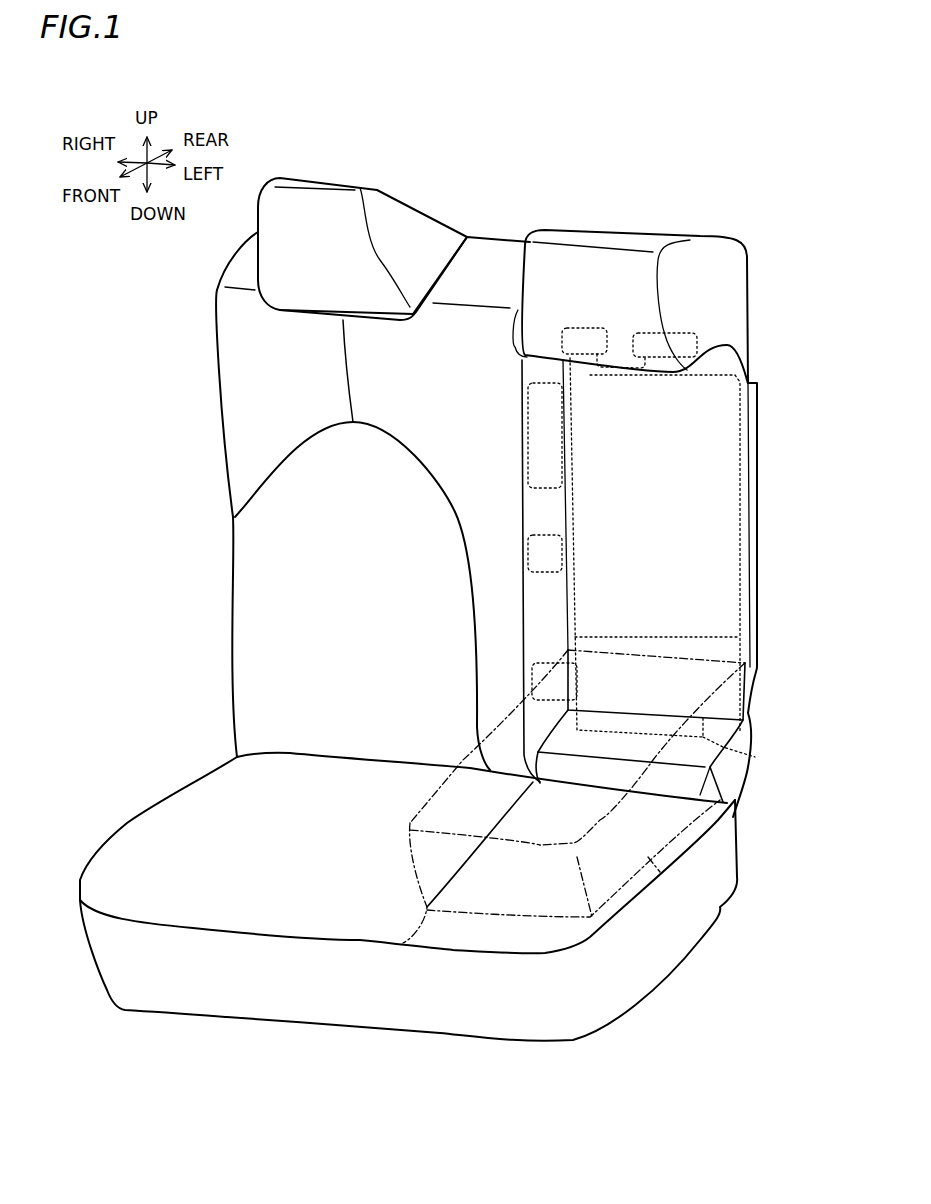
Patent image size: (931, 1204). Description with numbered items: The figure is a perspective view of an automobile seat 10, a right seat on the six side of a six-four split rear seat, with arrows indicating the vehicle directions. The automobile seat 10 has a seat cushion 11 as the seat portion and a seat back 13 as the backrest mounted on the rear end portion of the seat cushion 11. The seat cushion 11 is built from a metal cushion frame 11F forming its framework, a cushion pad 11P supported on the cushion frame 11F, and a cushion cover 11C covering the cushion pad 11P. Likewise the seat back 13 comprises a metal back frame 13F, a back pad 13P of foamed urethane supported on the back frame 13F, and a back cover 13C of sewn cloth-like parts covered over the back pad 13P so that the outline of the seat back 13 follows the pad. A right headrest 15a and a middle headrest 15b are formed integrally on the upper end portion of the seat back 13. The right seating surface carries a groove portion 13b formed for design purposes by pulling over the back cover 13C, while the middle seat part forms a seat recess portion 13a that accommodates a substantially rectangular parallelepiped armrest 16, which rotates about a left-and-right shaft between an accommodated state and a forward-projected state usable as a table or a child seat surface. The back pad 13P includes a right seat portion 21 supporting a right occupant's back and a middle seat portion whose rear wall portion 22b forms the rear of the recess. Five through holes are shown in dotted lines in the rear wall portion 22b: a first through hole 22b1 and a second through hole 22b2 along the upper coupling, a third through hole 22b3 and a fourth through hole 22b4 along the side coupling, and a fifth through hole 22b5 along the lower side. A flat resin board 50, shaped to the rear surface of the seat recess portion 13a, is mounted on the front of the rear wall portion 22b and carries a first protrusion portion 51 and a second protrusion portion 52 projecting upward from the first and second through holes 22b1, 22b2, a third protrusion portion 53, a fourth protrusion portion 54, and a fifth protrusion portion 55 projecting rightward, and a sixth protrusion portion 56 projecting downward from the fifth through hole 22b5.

The automobile seat 10 is at (519, 158).
The seat cushion 11 is at (127, 820).
The cushion frame 11F is at (183, 823).
The cushion pad 11P is at (217, 810).
The cushion cover 11C is at (237, 793).
The seat back 13 is at (213, 345).
The seat recess portion 13a is at (660, 495).
The groove portion 13b is at (277, 465).
The back cover 13C is at (265, 543).
The back pad 13P is at (262, 575).
The back frame 13F is at (285, 640).
The right headrest 15a is at (316, 207).
The middle headrest 15b is at (600, 272).
The armrest 16 is at (628, 845).
The right seat portion 21 is at (265, 610).
The rear wall portion 22b is at (703, 568).
The first through hole 22b1 is at (683, 345).
The second through hole 22b2 is at (567, 330).
The third through hole 22b3 is at (568, 437).
The fourth through hole 22b4 is at (572, 548).
The fifth through hole 22b5 is at (657, 635).
The board 50 is at (688, 442).
The first protrusion portion 51 is at (676, 335).
The second protrusion portion 52 is at (597, 330).
The third protrusion portion 53 is at (523, 422).
The fourth protrusion portion 54 is at (528, 550).
The fifth protrusion portion 55 is at (527, 683).
The sixth protrusion portion 56 is at (755, 757).